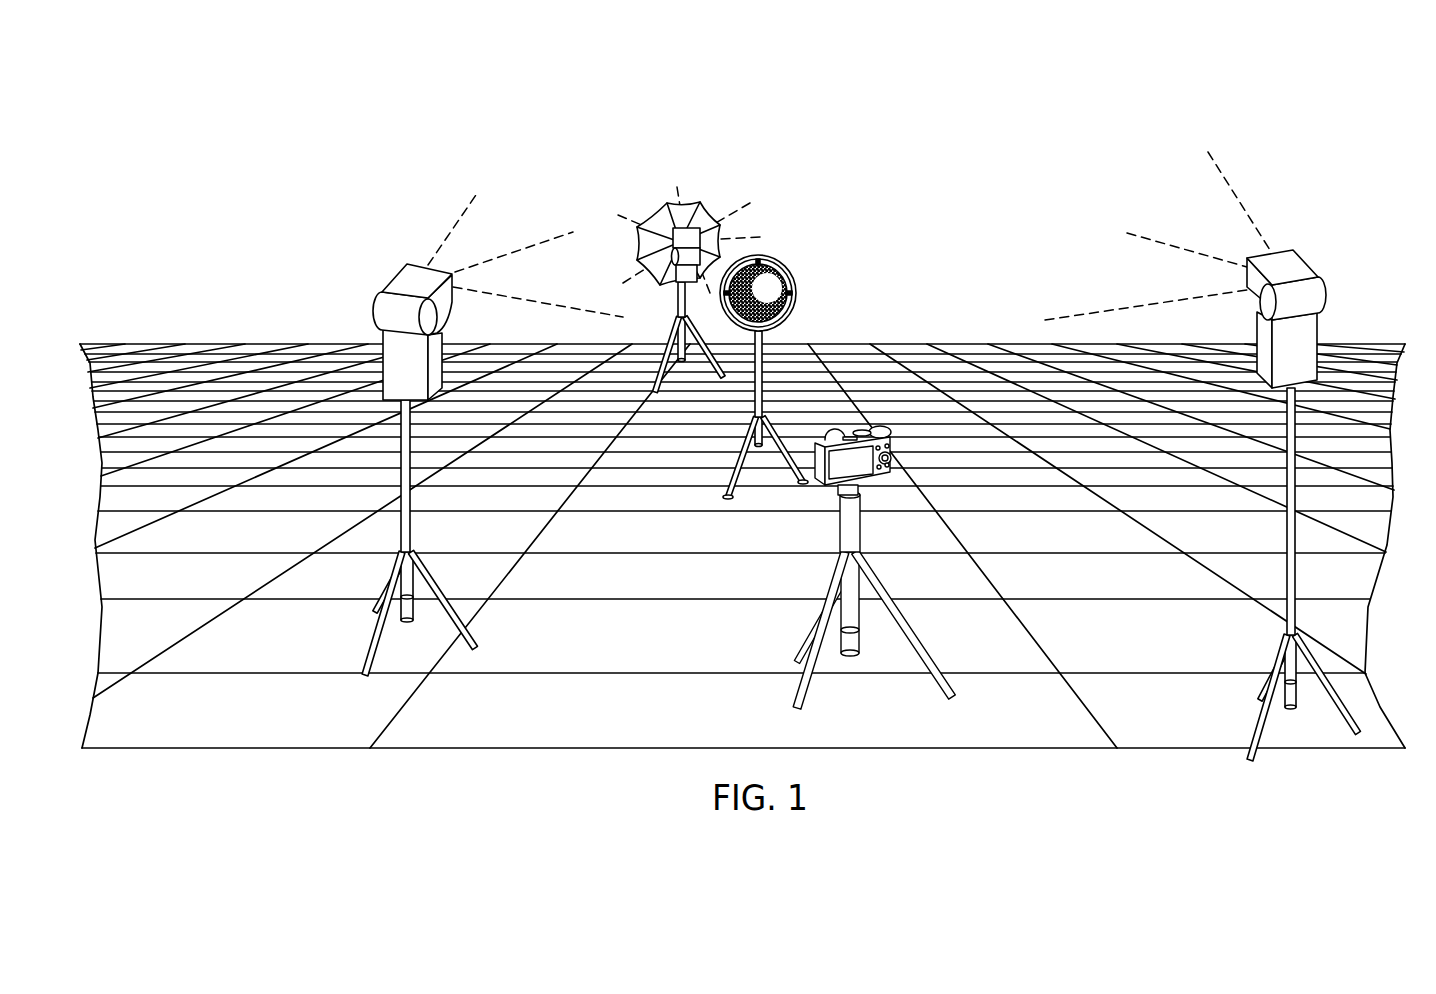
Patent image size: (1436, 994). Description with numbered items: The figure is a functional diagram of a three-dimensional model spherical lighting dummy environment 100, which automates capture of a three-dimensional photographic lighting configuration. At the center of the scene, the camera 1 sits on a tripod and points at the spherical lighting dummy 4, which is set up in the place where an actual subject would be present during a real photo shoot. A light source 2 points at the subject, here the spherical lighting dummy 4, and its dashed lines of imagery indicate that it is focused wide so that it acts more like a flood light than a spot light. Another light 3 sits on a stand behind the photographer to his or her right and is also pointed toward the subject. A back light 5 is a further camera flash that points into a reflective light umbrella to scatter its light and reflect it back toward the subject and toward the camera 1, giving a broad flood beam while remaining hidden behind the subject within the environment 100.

The 3D model spherical lighting dummy environment 100 is at (1260, 125).
The camera 1 is at (893, 447).
The light source 2 is at (392, 279).
The light 3 is at (1300, 268).
The spherical lighting dummy 4 is at (792, 277).
The back light 5 is at (692, 200).